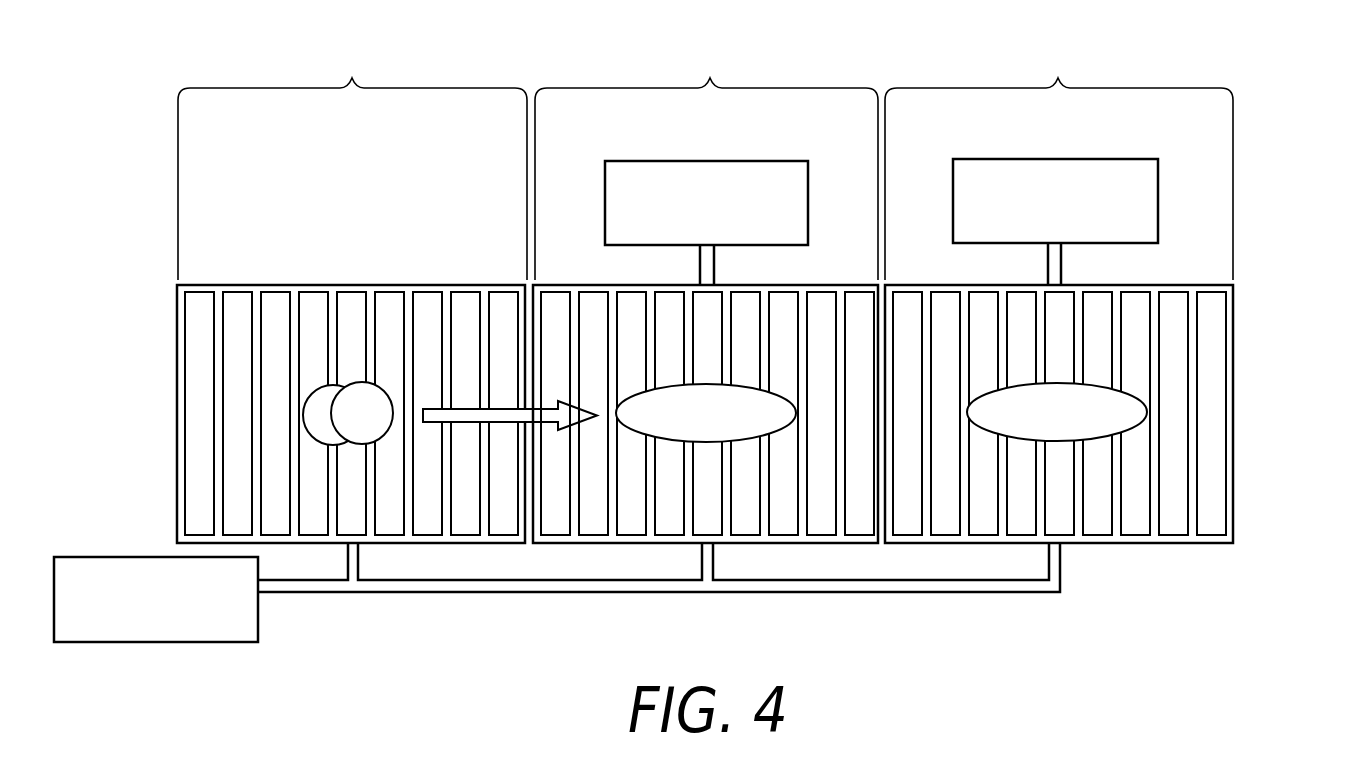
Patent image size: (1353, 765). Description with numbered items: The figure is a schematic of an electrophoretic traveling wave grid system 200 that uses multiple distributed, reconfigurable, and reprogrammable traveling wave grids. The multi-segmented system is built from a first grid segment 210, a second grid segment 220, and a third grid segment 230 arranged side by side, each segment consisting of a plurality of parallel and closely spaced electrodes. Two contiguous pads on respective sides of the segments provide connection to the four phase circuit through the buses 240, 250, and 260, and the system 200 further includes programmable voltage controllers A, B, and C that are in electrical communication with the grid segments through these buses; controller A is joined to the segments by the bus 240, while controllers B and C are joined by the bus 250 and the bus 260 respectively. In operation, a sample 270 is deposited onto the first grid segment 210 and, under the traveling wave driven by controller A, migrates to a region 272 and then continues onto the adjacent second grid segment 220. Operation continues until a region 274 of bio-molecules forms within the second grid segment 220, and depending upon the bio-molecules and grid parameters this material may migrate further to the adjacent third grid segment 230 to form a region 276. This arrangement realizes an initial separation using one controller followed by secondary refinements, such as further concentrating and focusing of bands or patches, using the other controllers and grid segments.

The electrophoretic traveling wave grid system 200 is at (1248, 72).
The first grid segment 210 is at (387, 292).
The second grid segment 220 is at (705, 292).
The third grid segment 230 is at (1059, 291).
The bus 240 is at (835, 583).
The bus 250 is at (714, 278).
The bus 260 is at (1061, 278).
The sample 270 is at (320, 405).
The region 272 is at (378, 402).
The region of bio-molecules 274 is at (740, 432).
The region of bio-molecules 276 is at (1098, 430).